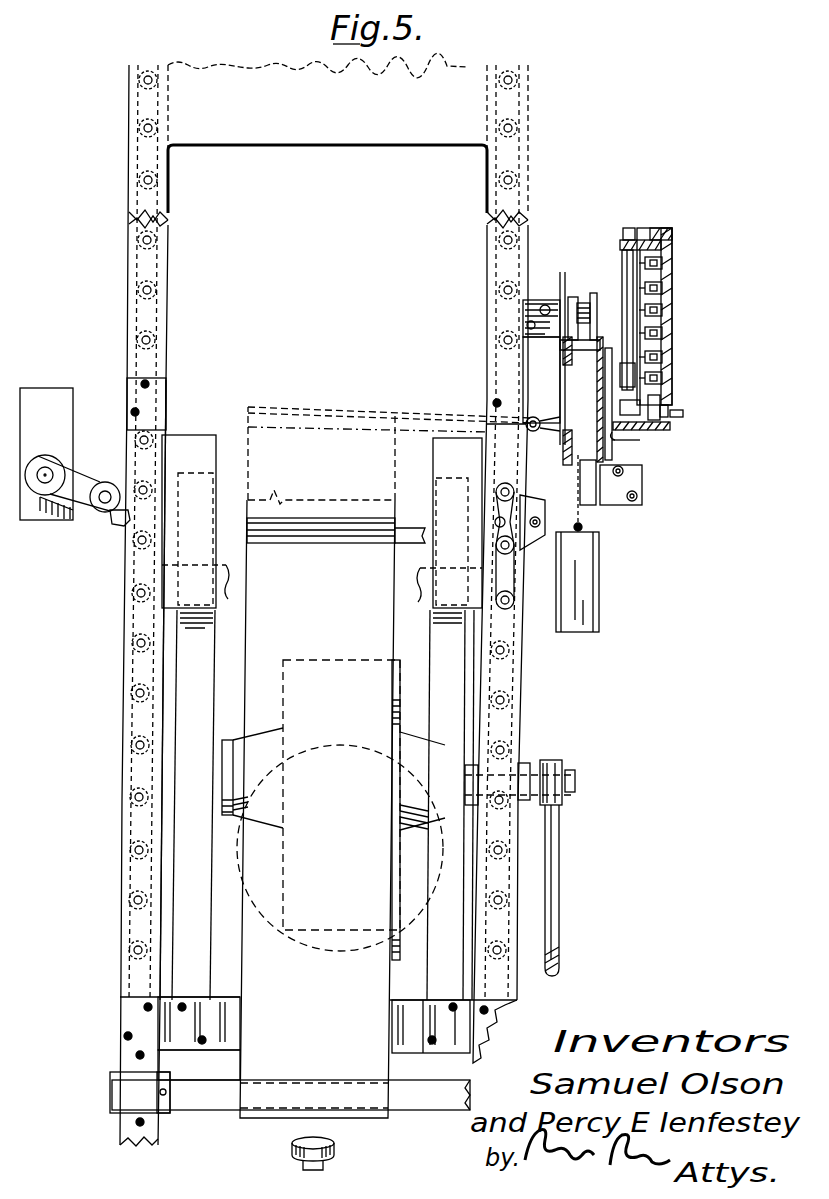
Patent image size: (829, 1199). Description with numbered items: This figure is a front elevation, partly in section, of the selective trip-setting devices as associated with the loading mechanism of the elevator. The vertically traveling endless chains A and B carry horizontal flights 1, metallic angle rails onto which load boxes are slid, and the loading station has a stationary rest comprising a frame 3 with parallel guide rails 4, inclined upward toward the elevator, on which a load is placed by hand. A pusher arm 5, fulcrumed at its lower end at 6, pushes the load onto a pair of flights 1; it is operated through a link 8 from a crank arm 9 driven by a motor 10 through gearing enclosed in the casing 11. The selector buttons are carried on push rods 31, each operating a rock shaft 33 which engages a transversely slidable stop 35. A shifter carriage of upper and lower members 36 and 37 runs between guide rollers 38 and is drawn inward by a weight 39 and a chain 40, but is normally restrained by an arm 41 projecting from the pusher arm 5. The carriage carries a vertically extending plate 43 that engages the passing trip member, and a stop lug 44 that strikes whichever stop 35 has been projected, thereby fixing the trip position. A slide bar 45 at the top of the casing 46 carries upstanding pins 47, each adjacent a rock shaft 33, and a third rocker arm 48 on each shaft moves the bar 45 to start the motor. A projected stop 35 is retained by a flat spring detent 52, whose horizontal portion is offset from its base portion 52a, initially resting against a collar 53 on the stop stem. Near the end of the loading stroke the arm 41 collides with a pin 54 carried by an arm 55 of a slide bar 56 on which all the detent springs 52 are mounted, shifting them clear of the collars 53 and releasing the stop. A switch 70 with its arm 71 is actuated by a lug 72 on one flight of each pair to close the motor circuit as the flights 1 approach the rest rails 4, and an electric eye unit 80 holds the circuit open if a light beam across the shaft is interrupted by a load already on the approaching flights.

The endless chains A is at (512, 158).
The endless chains B is at (129, 330).
The flights 1 is at (216, 608).
The frame 3 is at (182, 722).
The guide rails 4 is at (197, 433).
The pusher arm 5 is at (340, 616).
The fulcrum 6 is at (205, 1100).
The link 8 is at (559, 876).
The crank arm 9 is at (576, 785).
The motor 10 is at (398, 920).
The casing 11 is at (398, 700).
The push rods 31 is at (662, 312).
The rock shaft 33 is at (637, 272).
The stop 35 is at (684, 413).
The upper shifter member 36 is at (562, 393).
The lower shifter member 37 is at (578, 430).
The guide rollers 38 is at (565, 300).
The weight 39 is at (580, 580).
The chain 40 is at (586, 470).
The arm 41 is at (410, 540).
The plate 43 is at (560, 385).
The stop lug 44 is at (614, 448).
The slide bar 45 is at (672, 240).
The casing 46 is at (672, 258).
The pins 47 is at (655, 235).
The rocker arm 48 is at (640, 240).
The spring detent 52 is at (655, 410).
The base portion 52a is at (668, 420).
The collar 53 is at (660, 392).
The pin 54 is at (536, 432).
The arm 55 is at (618, 434).
The slide bar 56 is at (670, 428).
The switch 70 is at (57, 422).
The switch arm 71 is at (82, 490).
The lug 72 is at (118, 528).
The electric eye unit 80 is at (338, 1154).